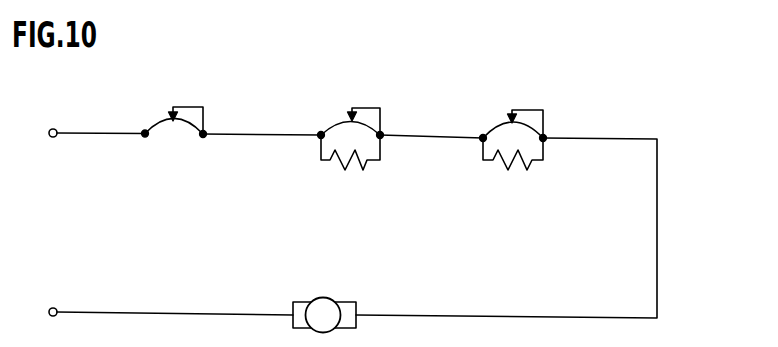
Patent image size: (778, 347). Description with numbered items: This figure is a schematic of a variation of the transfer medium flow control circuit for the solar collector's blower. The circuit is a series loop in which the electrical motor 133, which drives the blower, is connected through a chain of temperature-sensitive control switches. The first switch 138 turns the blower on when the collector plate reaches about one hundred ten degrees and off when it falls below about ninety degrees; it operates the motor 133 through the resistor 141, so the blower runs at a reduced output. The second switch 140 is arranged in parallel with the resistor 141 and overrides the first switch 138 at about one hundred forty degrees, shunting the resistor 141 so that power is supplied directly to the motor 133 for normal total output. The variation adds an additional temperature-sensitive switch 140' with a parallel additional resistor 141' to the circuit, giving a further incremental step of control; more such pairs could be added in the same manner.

The electrical motor 133 is at (328, 308).
The first temperature-sensitive control switch 138 is at (180, 126).
The second temperature-sensitive control switch 140 is at (373, 123).
The resistor 141 is at (371, 152).
The additional temperature-sensitive switch 140' is at (548, 126).
The additional resistor 141' is at (542, 154).